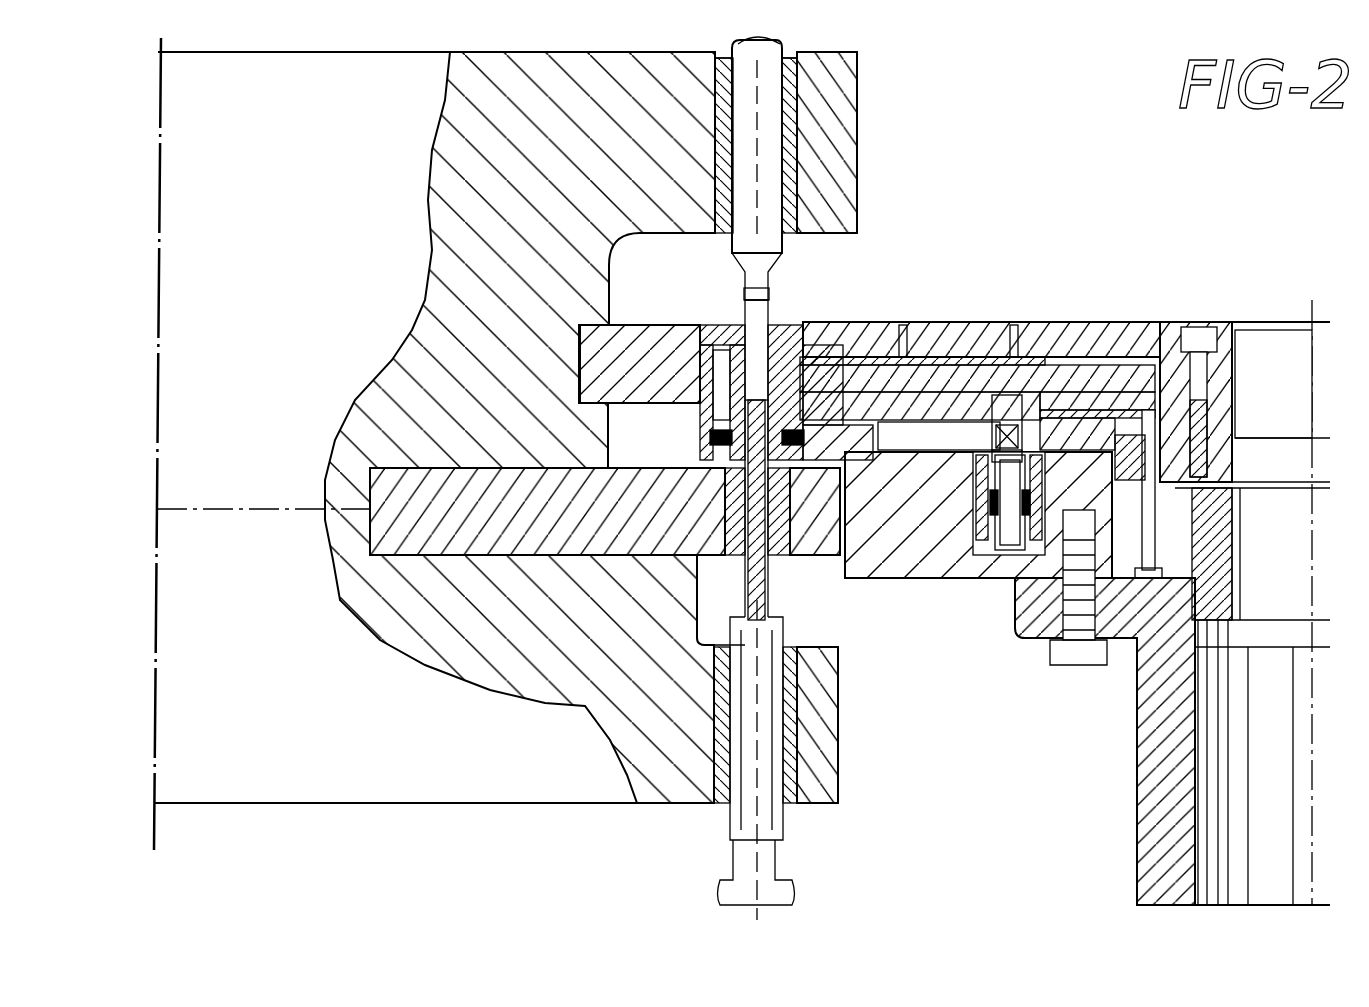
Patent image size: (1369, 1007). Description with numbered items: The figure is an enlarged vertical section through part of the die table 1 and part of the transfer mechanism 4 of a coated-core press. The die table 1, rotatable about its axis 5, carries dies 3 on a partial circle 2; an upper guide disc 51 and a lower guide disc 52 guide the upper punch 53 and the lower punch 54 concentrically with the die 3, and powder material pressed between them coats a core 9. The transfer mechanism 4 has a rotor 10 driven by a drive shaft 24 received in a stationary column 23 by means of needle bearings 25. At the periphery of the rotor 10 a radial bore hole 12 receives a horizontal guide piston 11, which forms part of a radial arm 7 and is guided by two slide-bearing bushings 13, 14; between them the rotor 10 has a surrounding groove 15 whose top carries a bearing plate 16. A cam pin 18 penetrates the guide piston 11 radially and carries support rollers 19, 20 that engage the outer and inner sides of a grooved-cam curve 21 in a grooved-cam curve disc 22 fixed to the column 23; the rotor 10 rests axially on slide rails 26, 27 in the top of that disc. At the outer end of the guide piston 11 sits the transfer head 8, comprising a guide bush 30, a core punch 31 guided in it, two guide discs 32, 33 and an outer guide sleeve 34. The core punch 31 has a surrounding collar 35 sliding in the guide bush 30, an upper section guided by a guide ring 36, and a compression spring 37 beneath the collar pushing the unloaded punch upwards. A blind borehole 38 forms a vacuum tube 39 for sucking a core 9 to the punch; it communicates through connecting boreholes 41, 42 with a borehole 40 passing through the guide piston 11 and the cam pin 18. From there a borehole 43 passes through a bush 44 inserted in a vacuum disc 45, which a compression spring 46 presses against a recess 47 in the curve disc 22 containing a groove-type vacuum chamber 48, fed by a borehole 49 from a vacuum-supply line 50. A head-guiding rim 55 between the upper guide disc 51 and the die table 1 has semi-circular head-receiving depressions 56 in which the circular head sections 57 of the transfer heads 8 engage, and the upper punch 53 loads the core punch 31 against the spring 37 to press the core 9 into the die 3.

The die table 1 is at (548, 805).
The partial circle 2 is at (745, 800).
The die 3 is at (730, 530).
The transfer mechanism 4 is at (967, 222).
The axis of the die table 5 is at (155, 765).
The radial arm 7 is at (960, 350).
The transfer head 8 is at (800, 335).
The core 9 is at (721, 600).
The rotor 10 is at (1165, 322).
The guide piston 11 is at (1080, 385).
The radial bore hole 12 is at (1030, 360).
The slide-bearing bushing 13 is at (1110, 380).
The slide-bearing bushing 14 is at (860, 360).
The surrounding groove 15 is at (936, 448).
The bearing plate 16 is at (1000, 355).
The cam pin 18 is at (990, 435).
The support roller 19 is at (980, 500).
The support roller 20 is at (975, 530).
The grooved-cam curve 21 is at (975, 585).
The grooved-cam curve disc 22 is at (985, 590).
The stationary column 23 is at (1060, 620).
The drive shaft 24 is at (1282, 766).
The needle bearing 25 is at (1225, 600).
The slide rail 26 is at (850, 458).
The slide rail 27 is at (1145, 480).
The guide bush 30 is at (735, 330).
The core punch 31 is at (770, 330).
The guide disc 32 is at (700, 327).
The guide disc 33 is at (700, 470).
The outer guide sleeve 34 is at (860, 325).
The surrounding collar 35 is at (712, 430).
The guide ring 36 is at (742, 330).
The compression spring 37 is at (705, 445).
The blind borehole 38 is at (770, 555).
The vacuum tube 39 is at (756, 477).
The borehole 40 is at (940, 360).
The connecting borehole 41 is at (782, 511).
The connecting borehole 42 is at (800, 420).
The borehole 43 is at (1215, 385).
The bush 44 is at (1215, 345).
The vacuum disc 45 is at (1240, 452).
The compression spring 46 is at (1215, 410).
The recess 47 is at (1230, 495).
The groove-type vacuum chamber 48 is at (1230, 520).
The borehole 49 is at (1230, 555).
The vacuum-supply line 50 is at (1230, 585).
The upper guide disc 51 is at (845, 130).
The lower guide disc 52 is at (840, 765).
The upper punch 53 is at (775, 95).
The lower punch 54 is at (770, 830).
The head-guiding rim 55 is at (580, 360).
The head-receiving depression 56 is at (700, 380).
The head section 57 is at (700, 350).